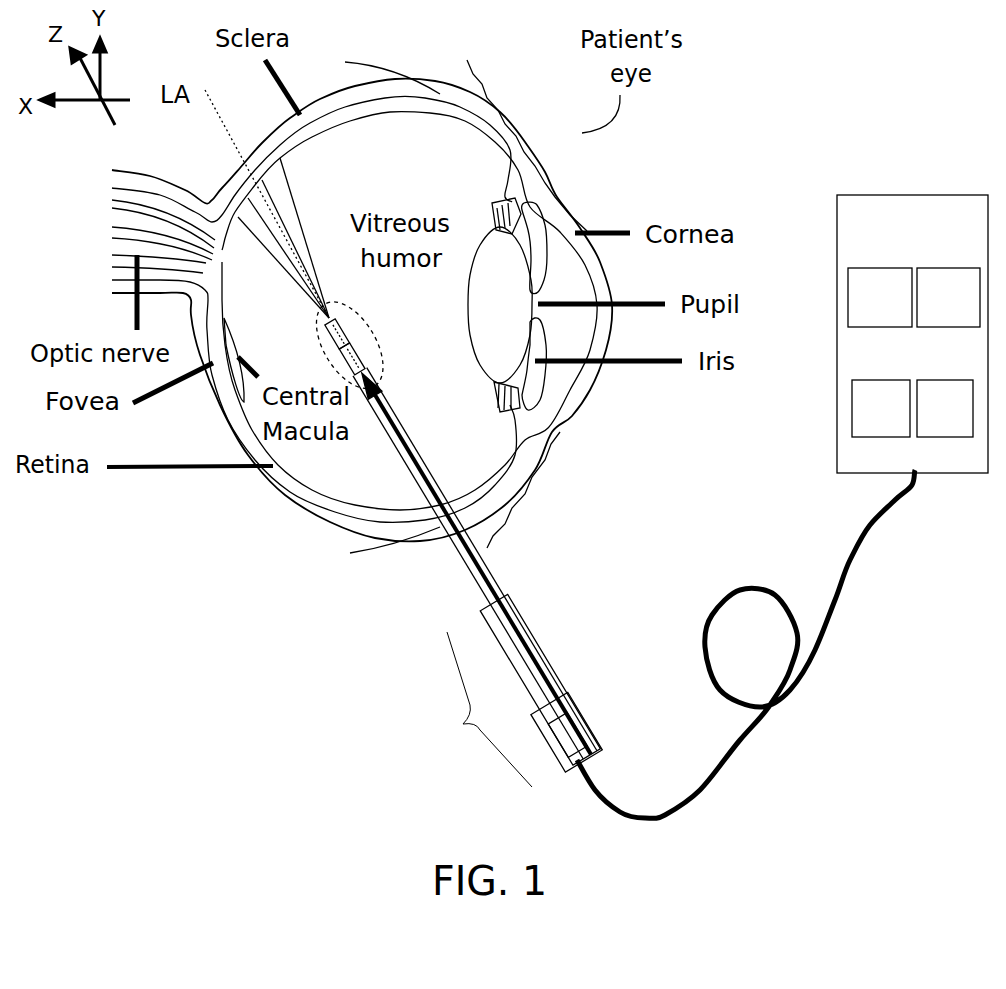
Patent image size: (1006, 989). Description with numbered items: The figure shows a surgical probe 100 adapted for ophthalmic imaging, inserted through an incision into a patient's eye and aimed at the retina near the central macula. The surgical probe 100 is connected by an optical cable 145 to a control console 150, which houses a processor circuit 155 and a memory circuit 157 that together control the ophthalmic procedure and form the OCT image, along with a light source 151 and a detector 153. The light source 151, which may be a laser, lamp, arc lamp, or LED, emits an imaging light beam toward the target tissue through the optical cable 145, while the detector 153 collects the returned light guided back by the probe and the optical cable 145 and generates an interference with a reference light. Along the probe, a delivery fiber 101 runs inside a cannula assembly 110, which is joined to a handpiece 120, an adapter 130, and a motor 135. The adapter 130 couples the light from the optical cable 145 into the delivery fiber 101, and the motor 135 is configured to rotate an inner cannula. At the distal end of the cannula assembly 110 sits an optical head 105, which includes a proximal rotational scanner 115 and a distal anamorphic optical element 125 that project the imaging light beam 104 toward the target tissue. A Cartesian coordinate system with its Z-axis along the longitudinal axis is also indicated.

The surgical probe 100 is at (463, 725).
The delivery fiber 101 is at (426, 594).
The imaging light beam 104 is at (302, 218).
The optical head 105 is at (294, 327).
The cannula assembly 110 is at (434, 588).
The proximal rotational scanner 115 is at (392, 363).
The handpiece 120 is at (579, 656).
The distal anamorphic optical element 125 is at (393, 332).
The adapter 130 is at (596, 690).
The motor 135 is at (550, 786).
The optical cable 145 is at (807, 688).
The control console 150 is at (940, 229).
The light source 151 is at (904, 423).
The detector 153 is at (968, 423).
The processor circuit 155 is at (903, 312).
The memory circuit 157 is at (971, 312).